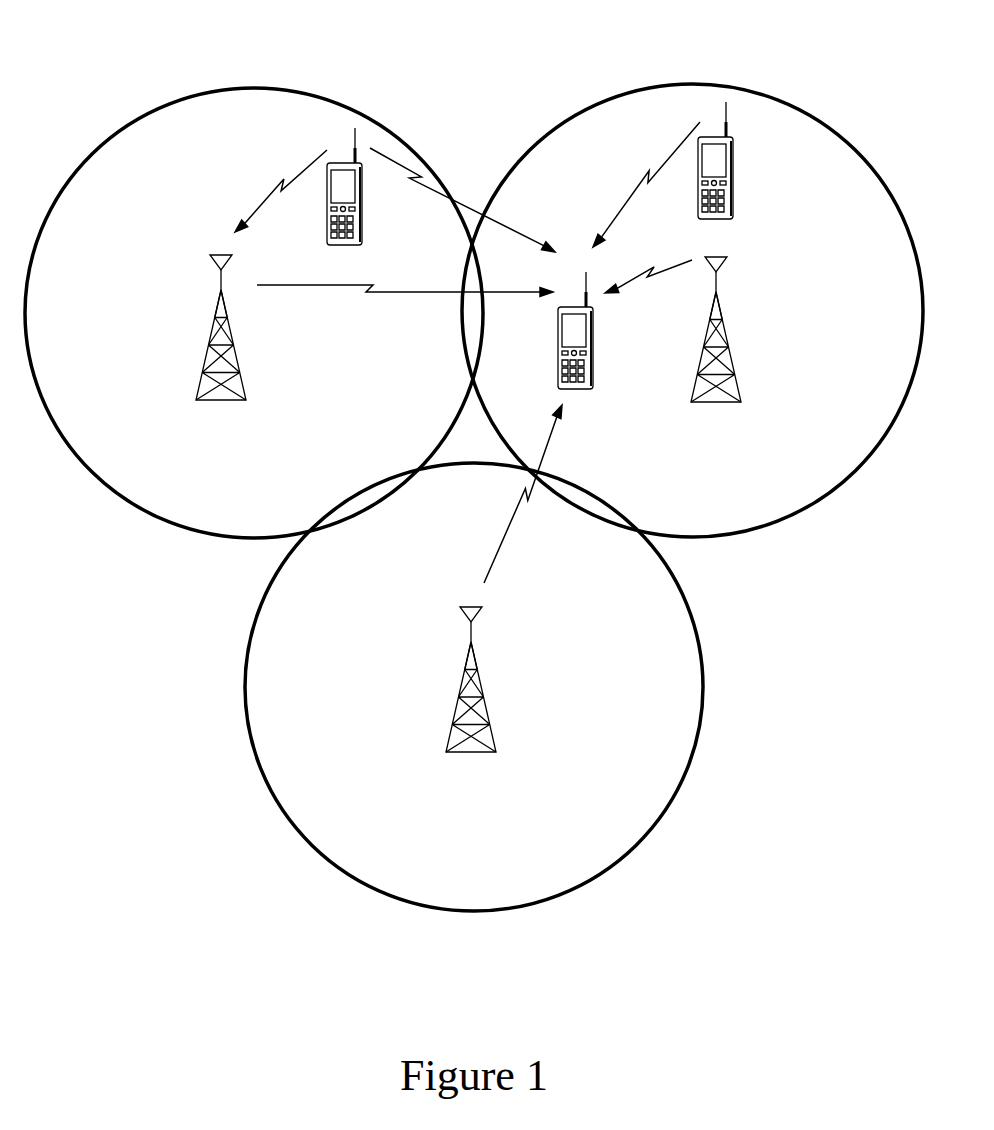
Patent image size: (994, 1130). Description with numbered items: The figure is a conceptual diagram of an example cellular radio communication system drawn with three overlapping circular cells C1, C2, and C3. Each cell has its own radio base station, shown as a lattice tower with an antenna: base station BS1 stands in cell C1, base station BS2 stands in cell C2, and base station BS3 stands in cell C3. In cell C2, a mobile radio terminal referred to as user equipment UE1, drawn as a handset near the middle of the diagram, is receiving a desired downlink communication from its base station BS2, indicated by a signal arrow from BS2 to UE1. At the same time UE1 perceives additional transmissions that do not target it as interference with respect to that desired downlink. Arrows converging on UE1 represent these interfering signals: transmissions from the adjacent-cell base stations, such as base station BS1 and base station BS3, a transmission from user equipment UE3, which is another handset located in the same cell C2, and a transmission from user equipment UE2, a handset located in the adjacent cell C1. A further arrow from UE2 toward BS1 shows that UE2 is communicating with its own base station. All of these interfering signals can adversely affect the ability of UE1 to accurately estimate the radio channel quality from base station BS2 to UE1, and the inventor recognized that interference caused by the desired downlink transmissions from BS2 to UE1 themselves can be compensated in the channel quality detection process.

The cell C1 is at (245, 88).
The cell C2 is at (693, 84).
The cell C3 is at (473, 912).
The radio base station BS1 is at (221, 349).
The radio base station BS2 is at (716, 350).
The radio base station BS3 is at (471, 697).
The user equipment UE1 is at (604, 330).
The user equipment UE2 is at (370, 186).
The user equipment UE3 is at (746, 160).